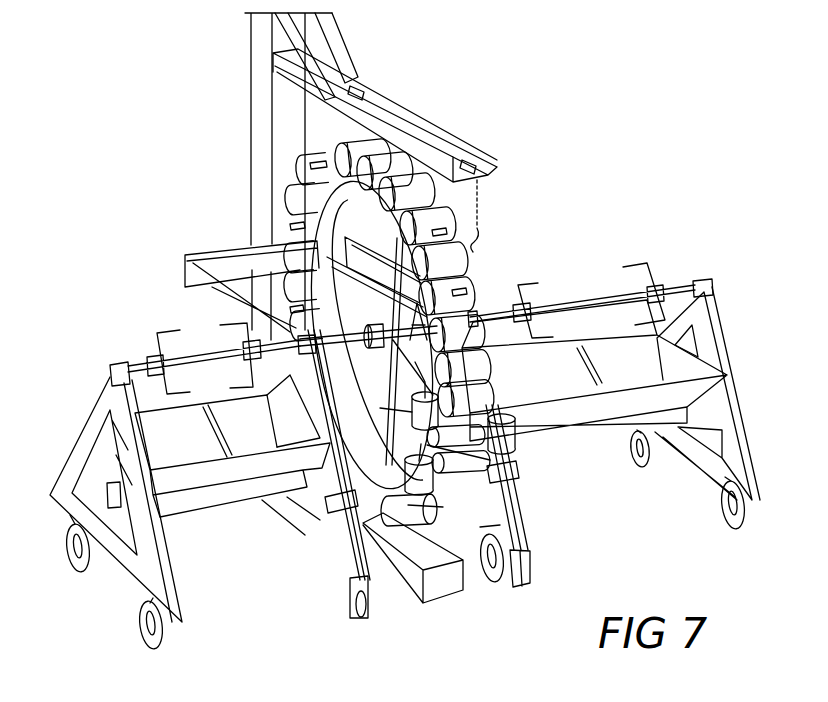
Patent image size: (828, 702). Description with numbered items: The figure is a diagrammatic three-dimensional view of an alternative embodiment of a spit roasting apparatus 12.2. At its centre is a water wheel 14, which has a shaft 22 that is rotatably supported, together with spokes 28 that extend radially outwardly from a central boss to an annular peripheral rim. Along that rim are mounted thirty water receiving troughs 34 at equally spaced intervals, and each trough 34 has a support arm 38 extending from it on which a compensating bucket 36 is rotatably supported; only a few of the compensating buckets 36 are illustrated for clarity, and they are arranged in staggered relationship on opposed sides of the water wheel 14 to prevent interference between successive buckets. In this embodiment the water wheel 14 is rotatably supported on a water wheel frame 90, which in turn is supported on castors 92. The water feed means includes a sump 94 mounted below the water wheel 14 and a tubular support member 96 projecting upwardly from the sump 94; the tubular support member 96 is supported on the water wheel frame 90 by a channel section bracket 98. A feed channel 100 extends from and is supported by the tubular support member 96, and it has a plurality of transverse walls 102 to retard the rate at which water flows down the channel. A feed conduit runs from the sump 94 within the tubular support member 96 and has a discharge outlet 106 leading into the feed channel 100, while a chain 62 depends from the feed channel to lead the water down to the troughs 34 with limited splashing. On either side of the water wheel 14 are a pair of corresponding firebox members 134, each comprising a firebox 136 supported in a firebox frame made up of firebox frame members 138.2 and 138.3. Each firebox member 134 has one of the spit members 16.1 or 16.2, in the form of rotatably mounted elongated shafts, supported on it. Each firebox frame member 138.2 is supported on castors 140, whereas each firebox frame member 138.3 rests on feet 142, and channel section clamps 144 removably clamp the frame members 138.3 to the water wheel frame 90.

The spit roasting apparatus 12.2 is at (208, 77).
The water wheel 14 is at (572, 218).
The spit member 16.1 is at (193, 357).
The spit member 16.2 is at (560, 307).
The shaft 22 is at (334, 342).
The spokes 28 is at (417, 366).
The water receiving troughs 34 is at (465, 300).
The compensating bucket 36 is at (413, 410).
The support arm 38 is at (465, 262).
The chain 62 is at (480, 206).
The water wheel frame 90 is at (495, 522).
The castors 92 is at (364, 600).
The sump 94 is at (440, 590).
The tubular support member 96 is at (262, 127).
The channel section bracket 98 is at (187, 266).
The feed channel 100 is at (420, 123).
The transverse walls 102 is at (362, 87).
The discharge outlet 106 is at (328, 57).
The firebox members 134 is at (97, 381).
The firebox 136 is at (210, 480).
The firebox frame member 138.2 is at (133, 568).
The firebox frame member 138.3 is at (337, 547).
The castors 140 is at (147, 640).
The feet 142 is at (350, 600).
The channel section clamps 144 is at (337, 507).